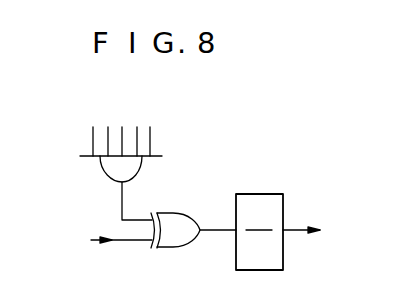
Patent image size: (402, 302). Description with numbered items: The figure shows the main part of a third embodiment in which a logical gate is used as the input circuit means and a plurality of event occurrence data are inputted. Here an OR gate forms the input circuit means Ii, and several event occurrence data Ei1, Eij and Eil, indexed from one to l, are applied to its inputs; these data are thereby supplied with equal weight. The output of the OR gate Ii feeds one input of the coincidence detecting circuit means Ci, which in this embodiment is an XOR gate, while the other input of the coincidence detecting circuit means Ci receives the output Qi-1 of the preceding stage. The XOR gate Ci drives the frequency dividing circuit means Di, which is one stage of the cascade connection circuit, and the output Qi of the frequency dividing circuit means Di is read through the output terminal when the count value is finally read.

The event occurrence data Ei1 is at (93, 130).
The event occurrence data Eij is at (122, 130).
The event occurrence data Eil is at (151, 130).
The input circuit means Ii is at (101, 166).
The coincidence detecting circuit means Ci is at (175, 213).
The frequency dividing circuit means Di is at (262, 194).
The output of preceding frequency dividing circuit means Qi-1 is at (97, 240).
The output of frequency dividing circuit means Qi is at (316, 231).